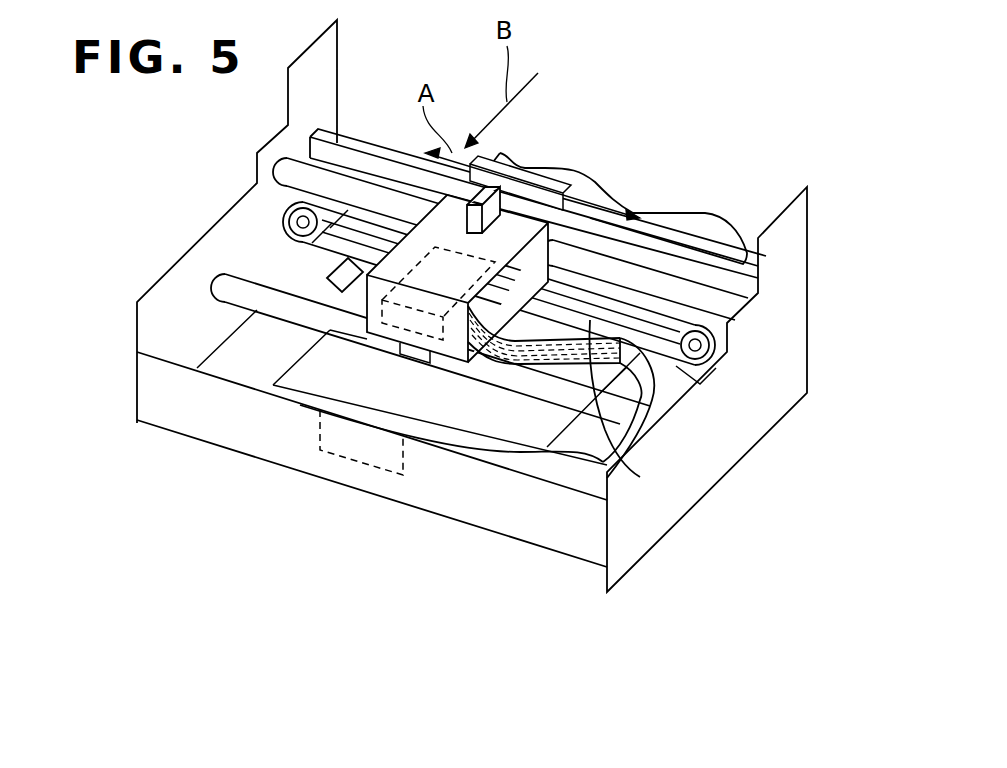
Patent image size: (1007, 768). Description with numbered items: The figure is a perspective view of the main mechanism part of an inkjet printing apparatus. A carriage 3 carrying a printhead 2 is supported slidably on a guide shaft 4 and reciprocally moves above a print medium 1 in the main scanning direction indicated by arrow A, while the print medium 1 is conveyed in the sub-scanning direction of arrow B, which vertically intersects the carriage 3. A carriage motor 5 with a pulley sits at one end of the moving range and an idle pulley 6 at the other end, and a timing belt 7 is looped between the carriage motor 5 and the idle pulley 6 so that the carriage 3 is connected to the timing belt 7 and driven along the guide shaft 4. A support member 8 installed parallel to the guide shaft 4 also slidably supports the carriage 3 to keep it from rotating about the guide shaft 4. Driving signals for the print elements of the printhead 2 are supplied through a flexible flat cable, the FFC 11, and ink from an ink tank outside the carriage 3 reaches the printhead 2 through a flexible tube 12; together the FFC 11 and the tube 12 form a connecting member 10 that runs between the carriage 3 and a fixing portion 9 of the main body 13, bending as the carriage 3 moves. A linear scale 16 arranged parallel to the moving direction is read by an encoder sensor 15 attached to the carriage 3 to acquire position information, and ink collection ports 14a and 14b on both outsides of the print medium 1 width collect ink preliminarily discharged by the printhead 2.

The print medium 1 is at (612, 196).
The printhead 2 is at (487, 257).
The carriage 3 is at (543, 212).
The guide shaft 4 is at (347, 186).
The carriage motor 5 is at (290, 205).
The idle pulley 6 is at (707, 330).
The timing belt 7 is at (630, 360).
The support member 8 is at (277, 310).
The fixing portion 9 is at (358, 447).
The connecting member 10 is at (805, 488).
The FFC 11 is at (650, 393).
The tube 12 is at (592, 357).
The main body 13 is at (493, 500).
The ink collection port 14a is at (673, 373).
The ink collection port 14b is at (325, 275).
The encoder sensor 15 is at (497, 173).
The linear scale 16 is at (375, 163).